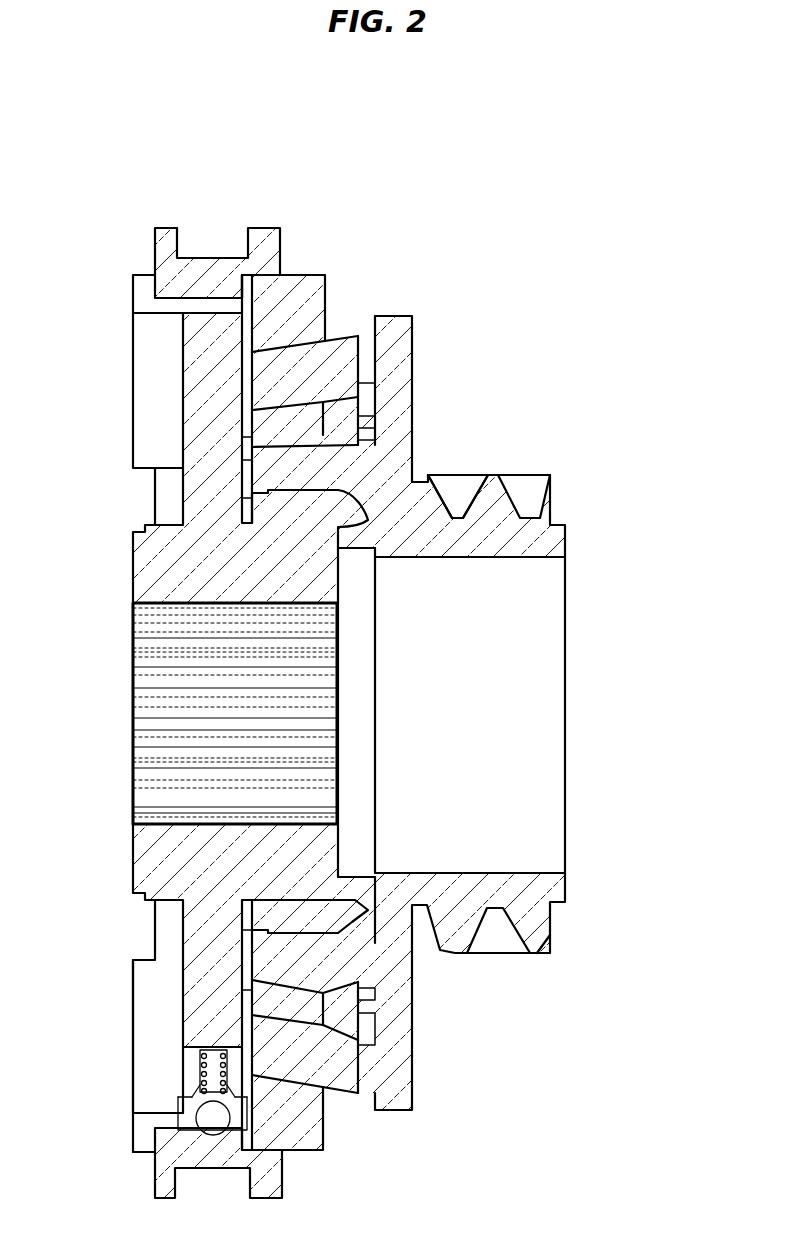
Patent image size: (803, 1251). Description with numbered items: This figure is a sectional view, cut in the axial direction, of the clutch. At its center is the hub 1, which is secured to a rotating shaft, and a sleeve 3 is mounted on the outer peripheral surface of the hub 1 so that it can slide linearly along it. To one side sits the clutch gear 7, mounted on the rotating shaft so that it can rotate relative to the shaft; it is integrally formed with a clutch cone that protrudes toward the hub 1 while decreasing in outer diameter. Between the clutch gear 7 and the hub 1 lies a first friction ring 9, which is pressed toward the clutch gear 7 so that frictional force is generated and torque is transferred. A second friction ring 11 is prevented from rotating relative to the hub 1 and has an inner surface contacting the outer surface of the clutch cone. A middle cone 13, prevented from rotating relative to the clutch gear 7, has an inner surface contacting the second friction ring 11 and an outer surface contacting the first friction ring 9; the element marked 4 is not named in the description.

The hub 1 is at (148, 565).
The sleeve 3 is at (264, 233).
The tooth 4 is at (451, 501).
The clutch gear 7 is at (548, 542).
The first friction ring 9 is at (310, 287).
The second friction ring 11 is at (297, 427).
The middle cone 13 is at (345, 357).